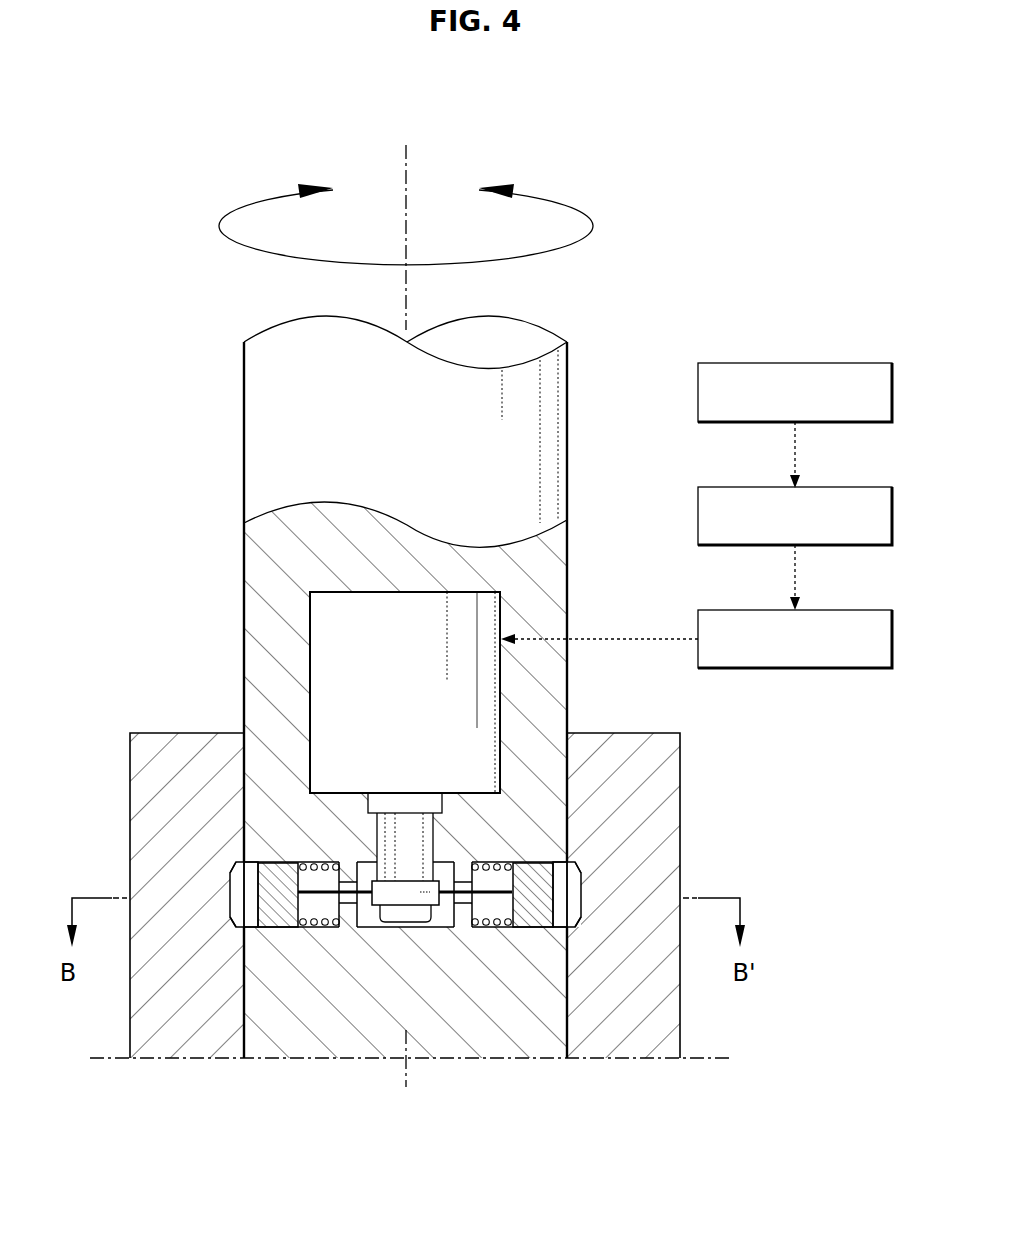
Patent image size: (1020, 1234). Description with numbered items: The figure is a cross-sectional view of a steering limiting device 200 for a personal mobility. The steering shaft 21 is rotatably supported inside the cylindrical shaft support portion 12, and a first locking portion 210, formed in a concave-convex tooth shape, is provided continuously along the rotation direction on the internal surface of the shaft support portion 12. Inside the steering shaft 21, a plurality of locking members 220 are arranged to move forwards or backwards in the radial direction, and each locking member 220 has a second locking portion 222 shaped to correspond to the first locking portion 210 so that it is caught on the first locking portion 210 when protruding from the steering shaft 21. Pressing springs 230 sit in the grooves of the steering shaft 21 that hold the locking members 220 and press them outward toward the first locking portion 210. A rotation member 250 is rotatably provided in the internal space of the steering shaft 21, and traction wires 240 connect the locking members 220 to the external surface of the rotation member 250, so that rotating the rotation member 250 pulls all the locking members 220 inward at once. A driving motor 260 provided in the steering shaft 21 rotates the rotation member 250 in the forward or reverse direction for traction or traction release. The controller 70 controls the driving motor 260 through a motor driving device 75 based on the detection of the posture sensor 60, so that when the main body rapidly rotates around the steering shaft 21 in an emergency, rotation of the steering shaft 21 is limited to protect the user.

The cylindrical shaft support portion 12 is at (666, 765).
The steering shaft 21 is at (262, 390).
The posture sensor 60 is at (861, 363).
The controller 70 is at (861, 487).
The motor driving device 75 is at (861, 610).
The steering limiting device 200 is at (200, 696).
The first locking portion 210 is at (232, 878).
The locking member 220 is at (280, 928).
The second locking portion 222 is at (238, 863).
The pressing spring 230 is at (328, 928).
The traction wire 240 is at (484, 905).
The rotation member 250 is at (408, 890).
The driving motor 260 is at (357, 613).